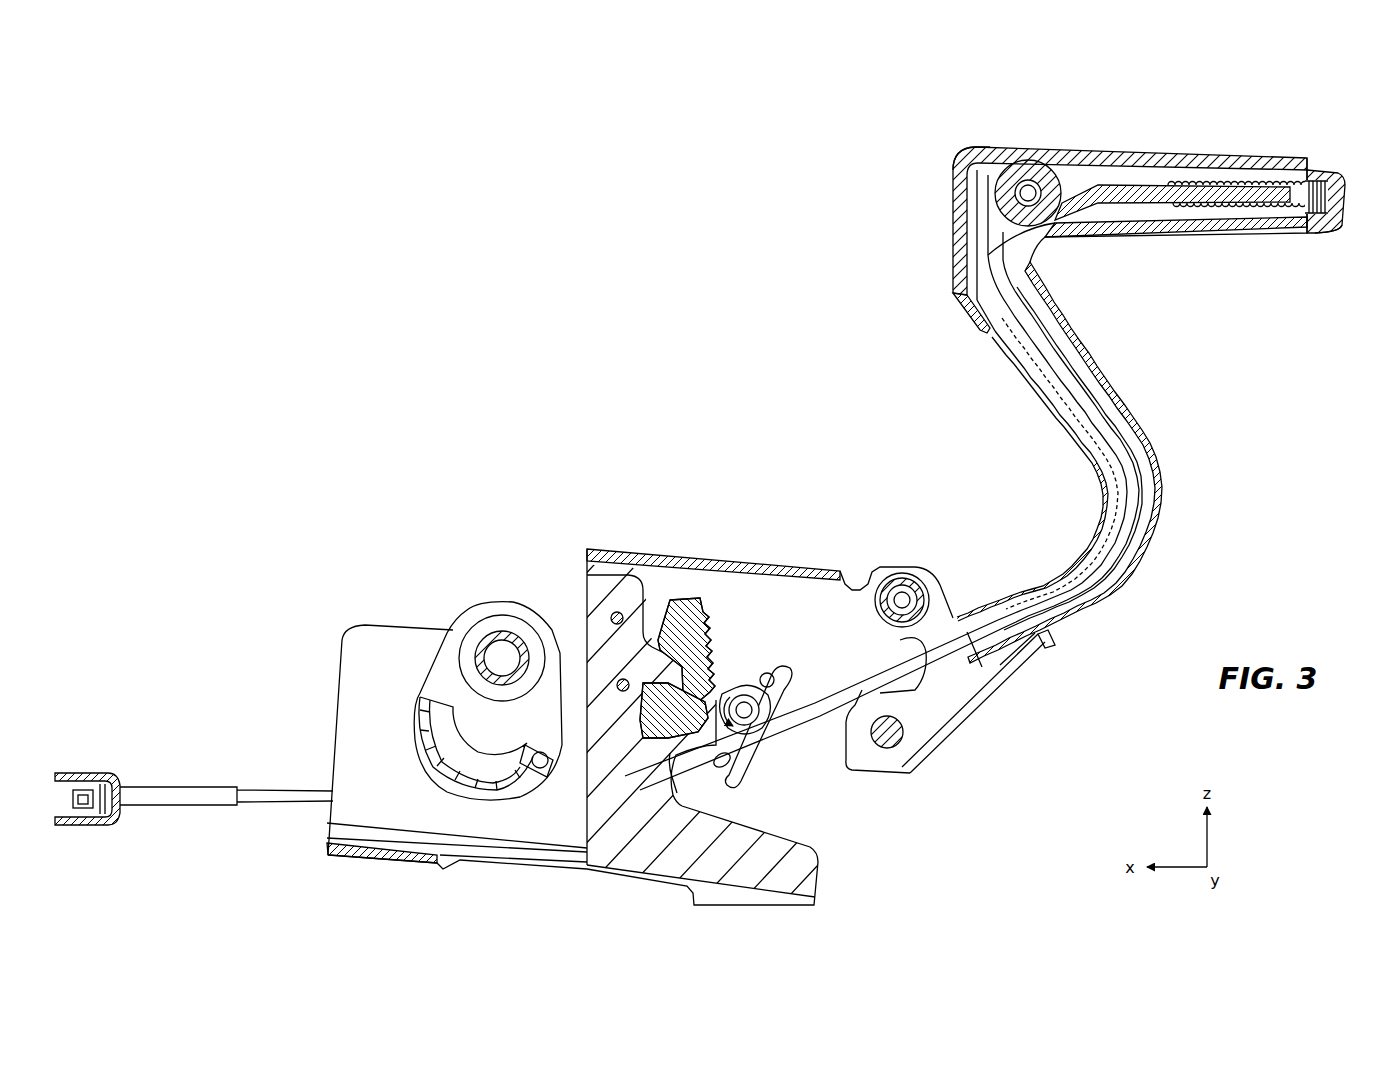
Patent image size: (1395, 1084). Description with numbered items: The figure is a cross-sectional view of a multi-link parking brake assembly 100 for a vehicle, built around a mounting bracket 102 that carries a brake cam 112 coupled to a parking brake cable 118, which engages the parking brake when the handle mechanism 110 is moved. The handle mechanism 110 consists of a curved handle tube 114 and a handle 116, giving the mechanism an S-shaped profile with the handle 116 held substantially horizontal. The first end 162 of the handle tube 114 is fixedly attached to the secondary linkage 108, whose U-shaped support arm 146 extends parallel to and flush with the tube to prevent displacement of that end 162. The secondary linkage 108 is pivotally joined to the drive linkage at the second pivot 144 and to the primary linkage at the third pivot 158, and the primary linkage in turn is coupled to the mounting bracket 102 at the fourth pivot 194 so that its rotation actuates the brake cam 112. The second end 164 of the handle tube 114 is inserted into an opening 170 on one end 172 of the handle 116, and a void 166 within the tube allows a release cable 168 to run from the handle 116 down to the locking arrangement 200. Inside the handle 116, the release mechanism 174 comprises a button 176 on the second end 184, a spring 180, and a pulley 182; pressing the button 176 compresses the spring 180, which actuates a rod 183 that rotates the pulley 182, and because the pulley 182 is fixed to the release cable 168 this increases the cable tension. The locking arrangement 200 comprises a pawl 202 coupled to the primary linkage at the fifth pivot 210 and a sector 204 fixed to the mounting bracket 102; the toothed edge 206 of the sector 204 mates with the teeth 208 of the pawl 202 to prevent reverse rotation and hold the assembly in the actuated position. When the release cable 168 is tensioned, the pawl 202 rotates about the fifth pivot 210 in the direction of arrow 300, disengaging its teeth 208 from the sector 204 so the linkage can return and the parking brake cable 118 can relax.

The parking brake assembly 100 is at (515, 312).
The mounting bracket 102 is at (590, 873).
The secondary linkage 108 is at (1000, 705).
The handle mechanism 110 is at (1237, 460).
The brake cam 112 is at (437, 648).
The handle tube 114 is at (1165, 494).
The handle 116 is at (1108, 148).
The parking brake cable 118 is at (272, 805).
The second pivot 144 is at (889, 752).
The support arm 146 is at (1052, 652).
The third pivot 158 is at (904, 584).
The first end of handle tube 162 is at (955, 608).
The second end of handle tube 164 is at (975, 176).
The void 166 is at (1080, 384).
The release cable 168 is at (1036, 330).
The opening 170 is at (990, 342).
The end of handle 172 is at (983, 337).
The release mechanism 174 is at (1307, 122).
The button 176 is at (1322, 172).
The spring 180 is at (1255, 180).
The pulley 182 is at (1027, 182).
The rod 183 is at (1155, 210).
The second end of handle 184 is at (1318, 234).
The fourth pivot 194 is at (500, 638).
The locking arrangement 200 is at (770, 640).
The pawl 202 is at (750, 782).
The sector 204 is at (697, 605).
The toothed edge 206 is at (705, 620).
The teeth 208 is at (686, 748).
The fifth pivot 210 is at (765, 712).
The arrow 300 is at (740, 692).